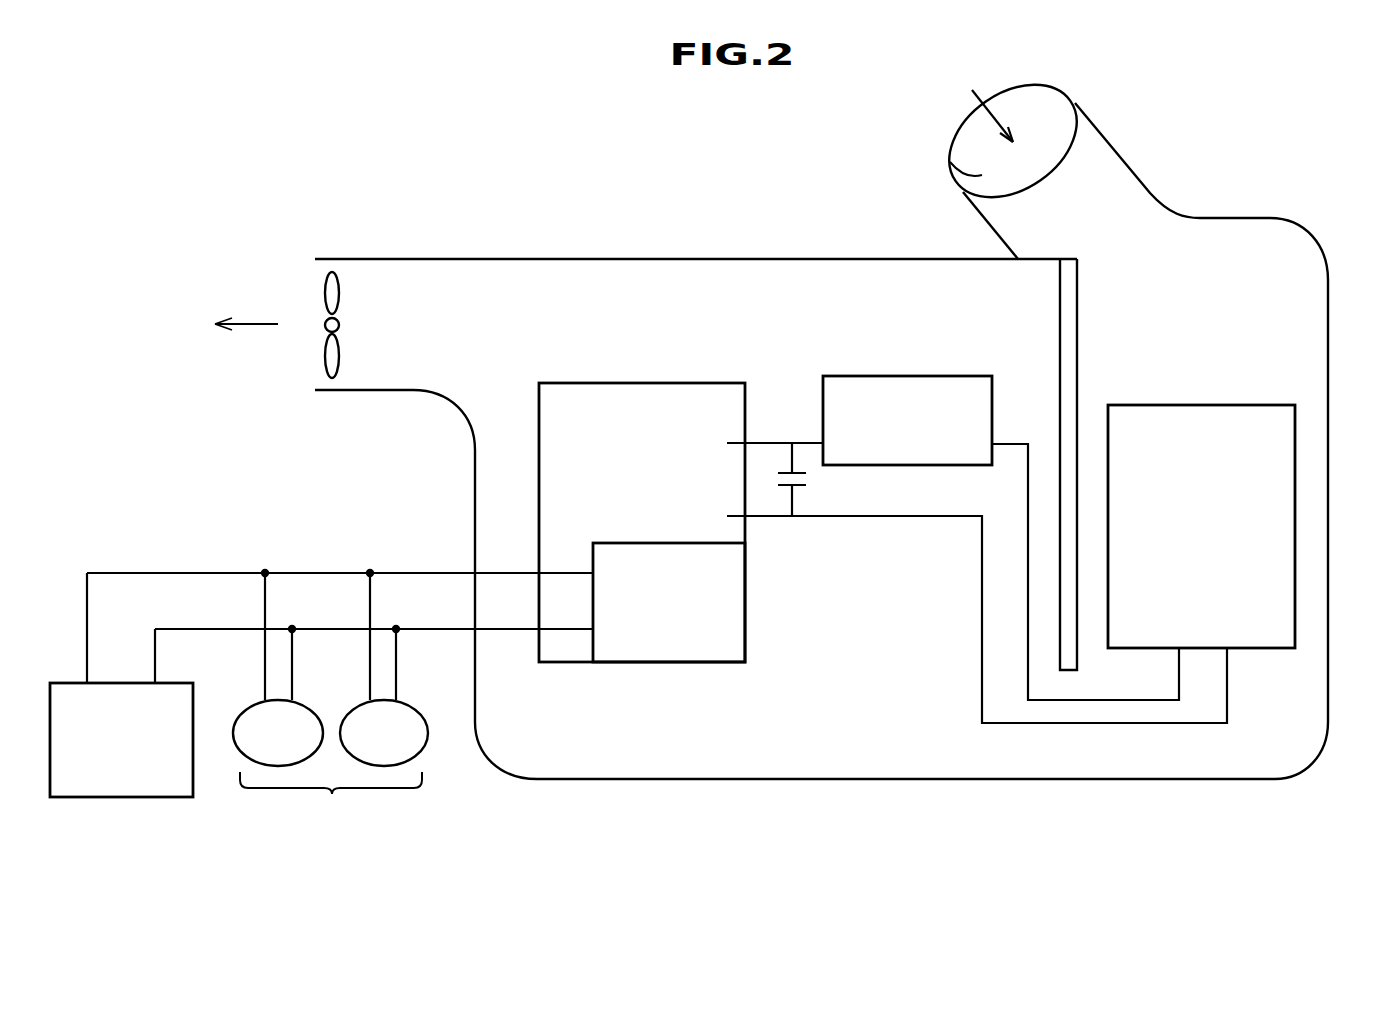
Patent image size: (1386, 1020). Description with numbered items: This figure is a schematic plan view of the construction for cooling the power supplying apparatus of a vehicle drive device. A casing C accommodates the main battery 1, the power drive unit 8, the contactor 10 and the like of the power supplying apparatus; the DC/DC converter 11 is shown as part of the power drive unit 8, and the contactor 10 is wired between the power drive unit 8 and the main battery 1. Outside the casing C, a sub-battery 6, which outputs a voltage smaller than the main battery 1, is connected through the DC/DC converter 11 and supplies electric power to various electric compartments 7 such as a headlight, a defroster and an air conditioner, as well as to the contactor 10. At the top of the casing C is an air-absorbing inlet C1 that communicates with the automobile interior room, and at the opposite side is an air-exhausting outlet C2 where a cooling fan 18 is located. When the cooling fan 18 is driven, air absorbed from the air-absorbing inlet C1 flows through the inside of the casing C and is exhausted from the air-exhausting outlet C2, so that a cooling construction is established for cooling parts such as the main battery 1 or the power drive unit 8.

The main battery 1 is at (1296, 498).
The sub-battery 6 is at (132, 797).
The electric compartments 7 is at (354, 735).
The power drive unit 8 is at (667, 383).
The contactor 10 is at (905, 376).
The DC/DC converter 11 is at (687, 663).
The cooling fan 18 is at (333, 290).
The casing C is at (1097, 797).
The air-absorbing inlet C1 is at (950, 162).
The air-exhausting outlet C2 is at (307, 387).